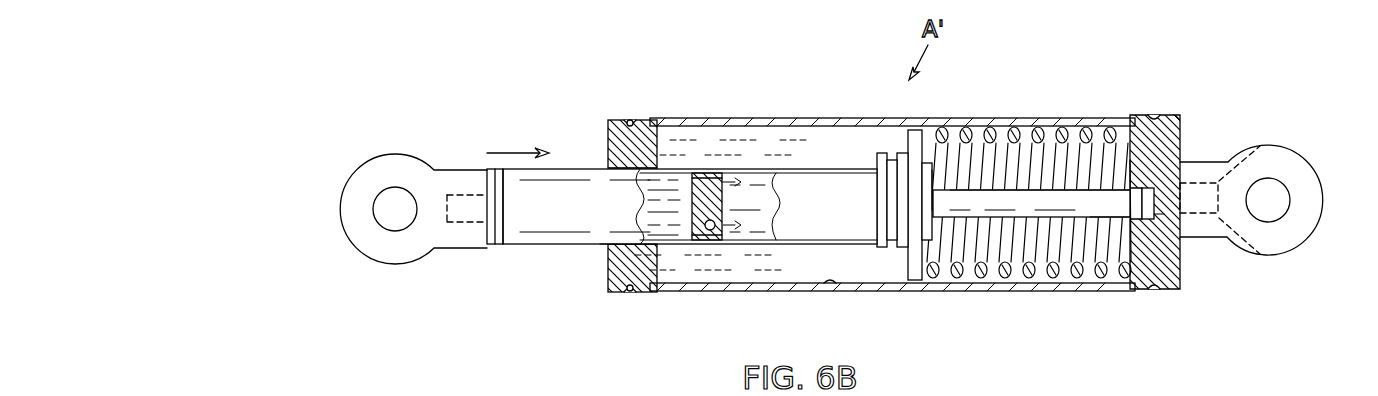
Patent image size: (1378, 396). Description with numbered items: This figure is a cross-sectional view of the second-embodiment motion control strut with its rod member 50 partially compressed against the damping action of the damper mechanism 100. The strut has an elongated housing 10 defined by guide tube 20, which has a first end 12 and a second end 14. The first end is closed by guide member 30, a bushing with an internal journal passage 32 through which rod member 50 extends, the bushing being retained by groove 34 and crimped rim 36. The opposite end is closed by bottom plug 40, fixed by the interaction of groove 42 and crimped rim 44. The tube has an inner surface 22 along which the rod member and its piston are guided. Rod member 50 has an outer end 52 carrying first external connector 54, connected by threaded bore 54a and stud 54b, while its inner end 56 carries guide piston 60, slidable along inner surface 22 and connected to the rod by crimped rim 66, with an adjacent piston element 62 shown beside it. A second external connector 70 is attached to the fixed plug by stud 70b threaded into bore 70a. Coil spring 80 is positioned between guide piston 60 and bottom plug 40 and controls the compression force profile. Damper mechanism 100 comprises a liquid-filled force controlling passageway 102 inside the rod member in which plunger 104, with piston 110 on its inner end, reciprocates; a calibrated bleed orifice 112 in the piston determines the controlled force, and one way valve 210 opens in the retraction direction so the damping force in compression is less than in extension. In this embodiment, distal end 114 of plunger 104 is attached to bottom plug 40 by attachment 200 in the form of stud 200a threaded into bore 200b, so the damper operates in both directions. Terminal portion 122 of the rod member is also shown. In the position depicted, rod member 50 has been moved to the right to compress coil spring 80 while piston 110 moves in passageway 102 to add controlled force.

The elongated housing 10 is at (814, 108).
The first end 12 is at (613, 120).
The second end 14 is at (1174, 117).
The guide tube 20 is at (866, 292).
The inner surface 22 is at (830, 284).
The guide member 30 is at (600, 138).
The journal passage 32 is at (606, 236).
The groove 34 is at (636, 121).
The crimped rim 36 is at (632, 293).
The bottom plug 40 is at (1184, 126).
The groove 42 is at (1154, 114).
The crimped rim 44 is at (1160, 291).
The rod member 50 is at (545, 248).
The outer end 52 is at (489, 250).
The first external connector 54 is at (357, 253).
The threaded bore 54a is at (457, 224).
The stud 54b is at (467, 195).
The inner end 56 is at (917, 130).
The guide piston 60 is at (925, 281).
The piston disc 62 is at (878, 152).
The crimped rim 66 is at (892, 155).
The second external connector 70 is at (1319, 174).
The bore 70a is at (1260, 254).
The stud 70b is at (1260, 146).
The coil spring 80 is at (1008, 128).
The damper mechanism 100 is at (1036, 188).
The force controlling passageway 102 is at (668, 246).
The plunger 104 is at (992, 205).
The piston 110 is at (645, 197).
The calibrated bleed orifice 112 is at (711, 172).
The distal end 114 is at (1118, 206).
The terminal portion 122 is at (934, 152).
The attachment 200 is at (1160, 186).
The stud 200a is at (1156, 190).
The bore 200b is at (1164, 214).
The one way valve 210 is at (718, 246).